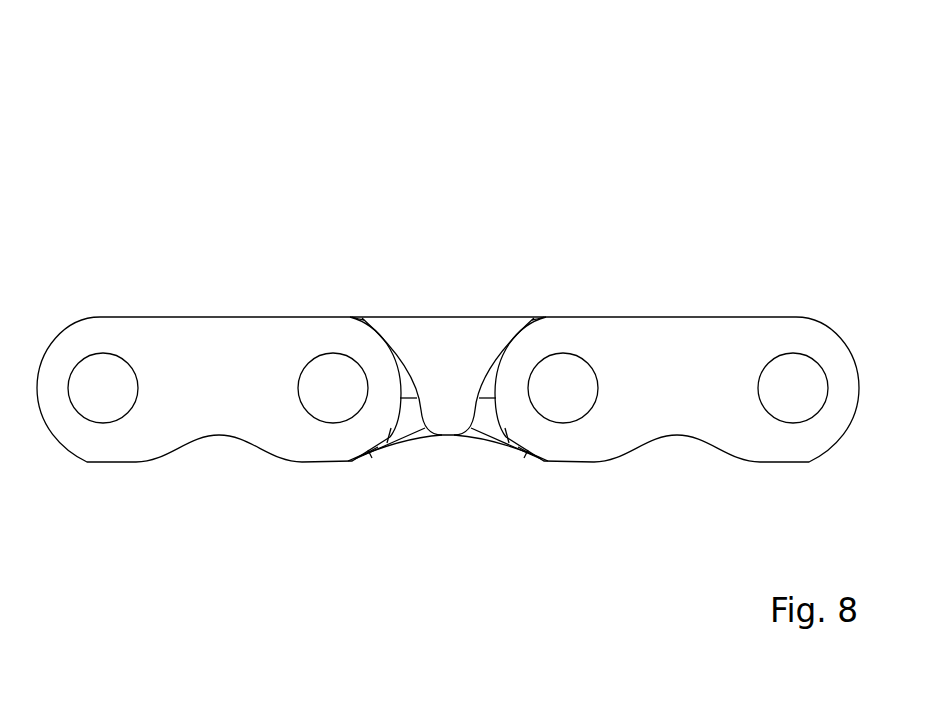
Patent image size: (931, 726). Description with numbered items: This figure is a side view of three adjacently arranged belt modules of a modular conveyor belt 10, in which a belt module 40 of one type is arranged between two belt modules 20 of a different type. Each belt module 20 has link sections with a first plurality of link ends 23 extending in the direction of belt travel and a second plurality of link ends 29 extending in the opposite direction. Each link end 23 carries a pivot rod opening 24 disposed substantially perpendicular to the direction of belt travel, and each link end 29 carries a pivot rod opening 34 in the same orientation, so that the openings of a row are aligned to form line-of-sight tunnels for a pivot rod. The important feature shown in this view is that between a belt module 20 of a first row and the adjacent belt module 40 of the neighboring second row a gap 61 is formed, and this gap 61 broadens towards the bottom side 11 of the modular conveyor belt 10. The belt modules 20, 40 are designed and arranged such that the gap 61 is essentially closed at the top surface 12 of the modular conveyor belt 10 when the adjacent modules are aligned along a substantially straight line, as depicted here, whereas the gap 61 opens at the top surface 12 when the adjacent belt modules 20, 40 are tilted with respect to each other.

The modular conveyor belt 10 is at (178, 122).
The bottom side 11 is at (457, 542).
The top surface 12 is at (448, 141).
The belt module 20 is at (177, 345).
The link ends 23 is at (332, 445).
The pivot rod opening 24 is at (322, 402).
The link ends 29 is at (557, 448).
The pivot rod opening 34 is at (563, 398).
The belt module 40 is at (478, 340).
The gap 61 is at (407, 431).